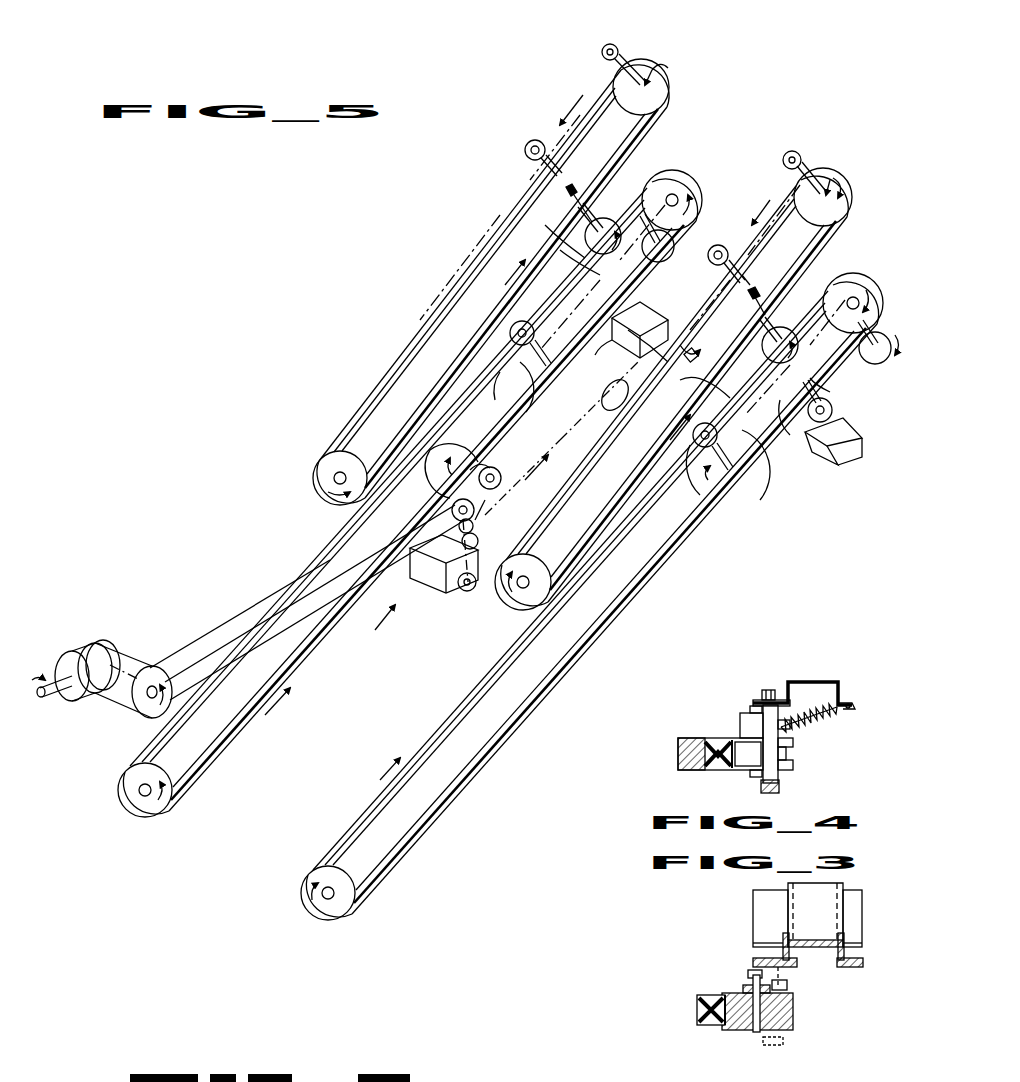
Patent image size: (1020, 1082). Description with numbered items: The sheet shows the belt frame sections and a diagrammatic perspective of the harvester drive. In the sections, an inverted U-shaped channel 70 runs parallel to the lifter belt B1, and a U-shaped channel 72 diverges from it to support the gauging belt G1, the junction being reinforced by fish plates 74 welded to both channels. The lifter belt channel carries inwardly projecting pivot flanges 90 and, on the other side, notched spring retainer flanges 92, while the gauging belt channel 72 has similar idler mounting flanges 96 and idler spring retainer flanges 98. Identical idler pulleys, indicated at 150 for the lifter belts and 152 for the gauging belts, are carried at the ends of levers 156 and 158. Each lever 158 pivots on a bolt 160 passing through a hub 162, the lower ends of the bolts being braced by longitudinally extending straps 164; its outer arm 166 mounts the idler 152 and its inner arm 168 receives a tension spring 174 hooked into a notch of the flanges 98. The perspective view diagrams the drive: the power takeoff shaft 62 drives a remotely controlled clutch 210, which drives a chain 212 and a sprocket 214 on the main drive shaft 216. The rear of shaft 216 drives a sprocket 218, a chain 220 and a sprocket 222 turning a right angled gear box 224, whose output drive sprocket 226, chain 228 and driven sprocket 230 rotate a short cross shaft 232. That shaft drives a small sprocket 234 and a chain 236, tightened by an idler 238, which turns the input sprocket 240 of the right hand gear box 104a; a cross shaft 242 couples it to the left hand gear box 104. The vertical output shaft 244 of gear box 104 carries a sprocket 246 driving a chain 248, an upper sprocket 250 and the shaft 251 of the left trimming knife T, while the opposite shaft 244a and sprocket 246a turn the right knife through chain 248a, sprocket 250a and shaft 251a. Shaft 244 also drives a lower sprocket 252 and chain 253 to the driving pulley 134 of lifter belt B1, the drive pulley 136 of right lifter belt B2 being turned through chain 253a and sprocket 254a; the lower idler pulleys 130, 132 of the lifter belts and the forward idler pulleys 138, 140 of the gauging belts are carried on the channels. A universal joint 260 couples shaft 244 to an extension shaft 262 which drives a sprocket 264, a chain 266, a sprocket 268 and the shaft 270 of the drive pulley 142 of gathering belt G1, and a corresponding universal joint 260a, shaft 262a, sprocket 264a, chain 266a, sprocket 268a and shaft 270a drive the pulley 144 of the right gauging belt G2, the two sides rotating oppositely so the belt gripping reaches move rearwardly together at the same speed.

In FIG. 5, the power takeoff shaft 62 is at (40, 697).
In FIG. 3, the inverted U-shaped channel 70 is at (822, 950).
In FIG. 4, the U-shaped channel 72 is at (835, 672).
In FIG. 3, the U-shaped channel 72 is at (850, 888).
In FIG. 3, the fish plates 74 is at (782, 940).
In FIG. 3, the pivot flanges 90 is at (755, 958).
In FIG. 3, the spring retainer flanges 92 is at (858, 958).
In FIG. 4, the idler mounting flanges 96 is at (758, 700).
In FIG. 4, the idler spring retainer flanges 98 is at (855, 704).
In FIG. 5, the left hand gear box 104 is at (852, 455).
In FIG. 5, the right hand angle gear box 104a is at (632, 342).
In FIG. 5, the lower idler pulley 130 is at (300, 895).
In FIG. 5, the lower idler pulley 132 is at (117, 796).
In FIG. 5, the driving pulley 134 is at (865, 292).
In FIG. 5, the driving pulley 136 is at (690, 175).
In FIG. 5, the forward idler pulley 138 is at (523, 605).
In FIG. 5, the forward idler pulley 140 is at (312, 477).
In FIG. 5, the rear drive pulley 142 is at (835, 175).
In FIG. 5, the rear drive pulley 144 is at (660, 70).
In FIG. 3, the idler pulley 150 is at (793, 1030).
In FIG. 4, the idler pulley 152 is at (735, 770).
In FIG. 3, the lever 156 is at (800, 990).
In FIG. 4, the lever 158 is at (795, 752).
In FIG. 4, the bolt 160 is at (771, 690).
In FIG. 4, the hub 162 is at (793, 763).
In FIG. 4, the straps 164 is at (782, 787).
In FIG. 4, the outer arm 166 is at (748, 718).
In FIG. 4, the inner arm 168 is at (790, 728).
In FIG. 4, the tension springs 174 is at (845, 718).
In FIG. 5, the remotely controlled clutch 210 is at (70, 652).
In FIG. 5, the chain 212 is at (115, 652).
In FIG. 5, the sprocket 214 is at (152, 680).
In FIG. 5, the main drive shaft 216 is at (228, 645).
In FIG. 5, the sprocket 218 is at (475, 508).
In FIG. 5, the chain 220 is at (474, 525).
In FIG. 5, the sprocket 222 is at (478, 541).
In FIG. 5, the right angled gear box 224 is at (440, 588).
In FIG. 5, the drive sprocket 226 is at (470, 592).
In FIG. 5, the chain 228 is at (494, 488).
In FIG. 5, the driven sprocket 230 is at (455, 445).
In FIG. 5, the cross shaft 232 is at (522, 470).
In FIG. 5, the small sprocket 234 is at (500, 470).
In FIG. 5, the chain 236 is at (592, 420).
In FIG. 5, the idler 238 is at (605, 390).
In FIG. 5, the input sprocket 240 is at (622, 310).
In FIG. 5, the cross shaft 242 is at (698, 358).
In FIG. 5, the vertical output shaft 244 is at (830, 405).
In FIG. 5, the output shaft 244a is at (590, 215).
In FIG. 5, the shaft sprocket 246 is at (800, 345).
In FIG. 5, the sprocket 246a is at (600, 215).
In FIG. 5, the chain 248 is at (710, 387).
In FIG. 5, the chain 248a is at (560, 250).
In FIG. 5, the upper sprocket 250 is at (697, 425).
In FIG. 5, the sprocket 250a is at (512, 325).
In FIG. 5, the shaft 251 is at (733, 468).
In FIG. 5, the shaft 251a is at (530, 348).
In FIG. 5, the lower sprocket 252 is at (883, 340).
In FIG. 5, the chain 253 is at (860, 388).
In FIG. 5, the chain 253a is at (545, 225).
In FIG. 5, the sprocket 254a is at (690, 240).
In FIG. 5, the universal joint 260 is at (790, 282).
In FIG. 5, the universal joint 260a is at (566, 190).
In FIG. 5, the extension shaft 262 is at (742, 278).
In FIG. 5, the extension shaft 262a is at (545, 165).
In FIG. 5, the sprocket 264 is at (729, 255).
In FIG. 5, the sprocket 264a is at (524, 150).
In FIG. 5, the chain 266 is at (812, 178).
In FIG. 5, the chain 266a is at (605, 62).
In FIG. 5, the sprocket 268 is at (793, 150).
In FIG. 5, the sprocket 268a is at (601, 50).
In FIG. 5, the shaft 270 is at (846, 182).
In FIG. 5, the shaft 270a is at (625, 52).
In FIG. 5, the left lifter belt B1 is at (480, 684).
In FIG. 4, the left lifter belt B1 is at (720, 742).
In FIG. 5, the right lifter belt B2 is at (335, 620).
In FIG. 4, the right lifter belt B2 is at (690, 752).
In FIG. 5, the left gauging belt G1 is at (598, 540).
In FIG. 3, the left gauging belt G1 is at (720, 1028).
In FIG. 5, the right gauging belt G2 is at (350, 425).
In FIG. 3, the right gauging belt G2 is at (700, 1005).
In FIG. 5, the trimming knife T is at (745, 492).